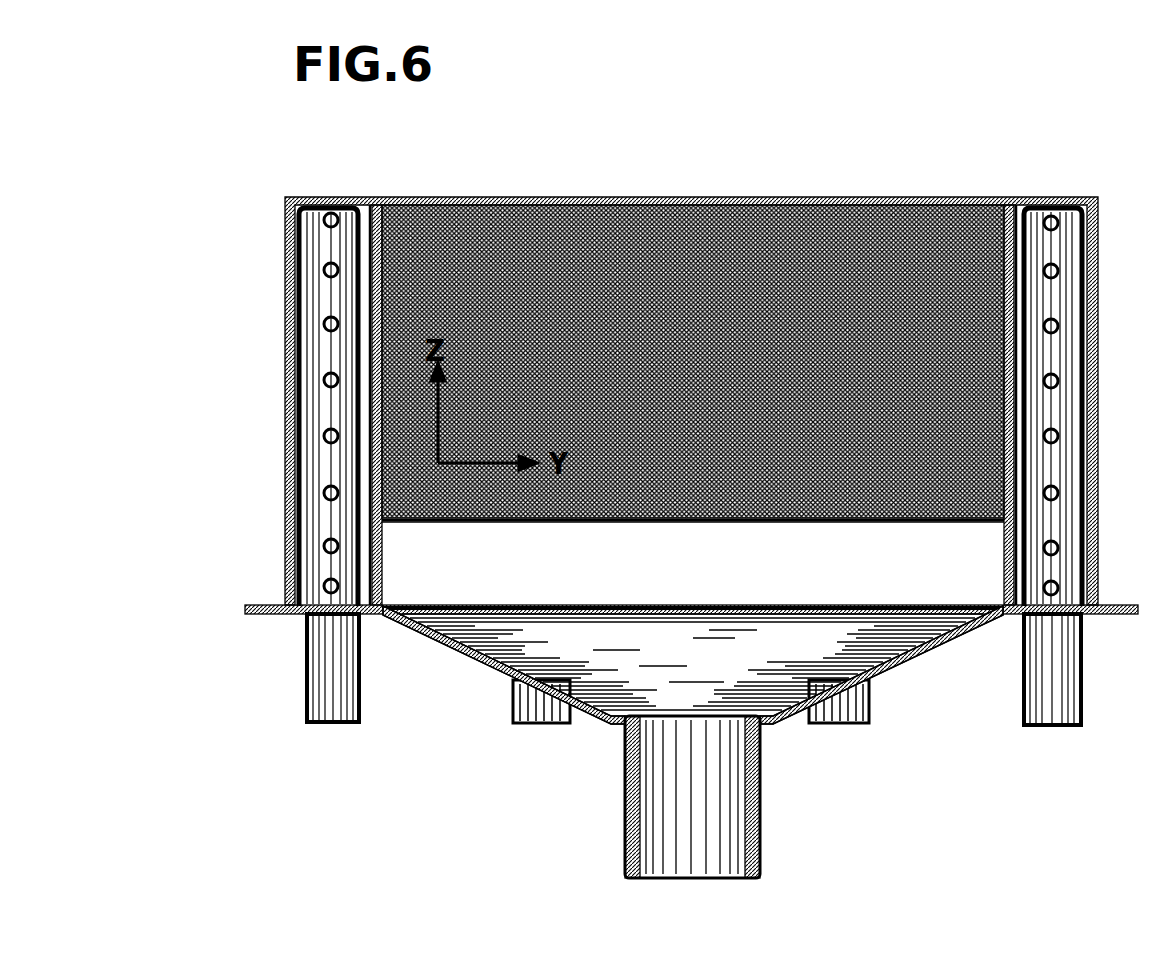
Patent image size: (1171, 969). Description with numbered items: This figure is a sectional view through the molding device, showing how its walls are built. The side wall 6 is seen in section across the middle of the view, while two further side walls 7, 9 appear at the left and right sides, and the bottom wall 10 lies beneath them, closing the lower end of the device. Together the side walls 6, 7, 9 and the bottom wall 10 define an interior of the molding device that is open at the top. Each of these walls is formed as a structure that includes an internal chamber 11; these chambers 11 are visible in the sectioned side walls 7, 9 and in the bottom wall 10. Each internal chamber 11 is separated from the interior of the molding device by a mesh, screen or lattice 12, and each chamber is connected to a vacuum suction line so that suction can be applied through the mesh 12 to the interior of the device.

The side wall 6 is at (624, 341).
The side wall 7 is at (1078, 378).
The side wall 9 is at (290, 381).
The bottom wall 10 is at (752, 583).
The internal chamber 11 is at (688, 543).
The mesh, screen or lattice 12 is at (872, 435).